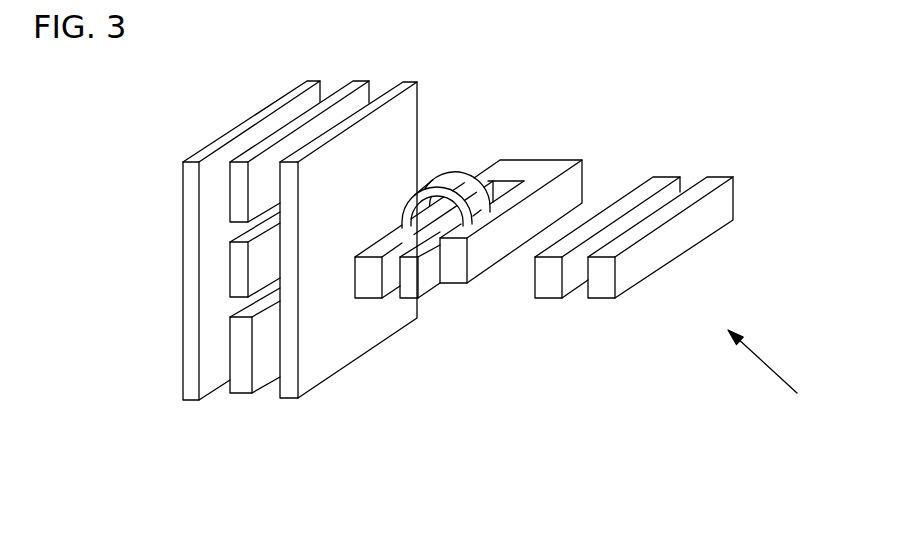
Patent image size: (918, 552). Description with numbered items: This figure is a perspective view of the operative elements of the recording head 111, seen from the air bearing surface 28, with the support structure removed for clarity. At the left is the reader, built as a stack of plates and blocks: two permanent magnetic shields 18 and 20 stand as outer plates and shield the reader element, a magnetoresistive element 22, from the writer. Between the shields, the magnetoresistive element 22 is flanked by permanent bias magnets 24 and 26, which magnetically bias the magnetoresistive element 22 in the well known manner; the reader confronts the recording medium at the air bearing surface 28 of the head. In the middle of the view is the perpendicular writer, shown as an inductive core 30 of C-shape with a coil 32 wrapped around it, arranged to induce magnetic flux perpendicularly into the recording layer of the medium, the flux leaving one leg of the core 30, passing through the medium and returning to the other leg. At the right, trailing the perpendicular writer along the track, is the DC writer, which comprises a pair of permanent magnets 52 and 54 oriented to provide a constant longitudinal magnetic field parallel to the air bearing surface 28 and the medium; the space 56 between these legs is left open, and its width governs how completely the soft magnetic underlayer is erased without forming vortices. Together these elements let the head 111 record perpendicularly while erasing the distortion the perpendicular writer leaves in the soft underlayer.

The permanent magnetic shield 18 is at (183, 257).
The permanent magnetic shield 20 is at (417, 117).
The magnetoresistive element 22 is at (228, 276).
The permanent bias magnet 24 is at (343, 80).
The permanent bias magnet 26 is at (231, 397).
The air bearing surface 28 is at (552, 287).
The inductive core 30 is at (503, 161).
The coil 32 is at (455, 176).
The permanent magnet 52 is at (662, 174).
The permanent magnet 54 is at (735, 197).
The space between the legs 56 is at (575, 299).
The recording head 111 is at (781, 374).